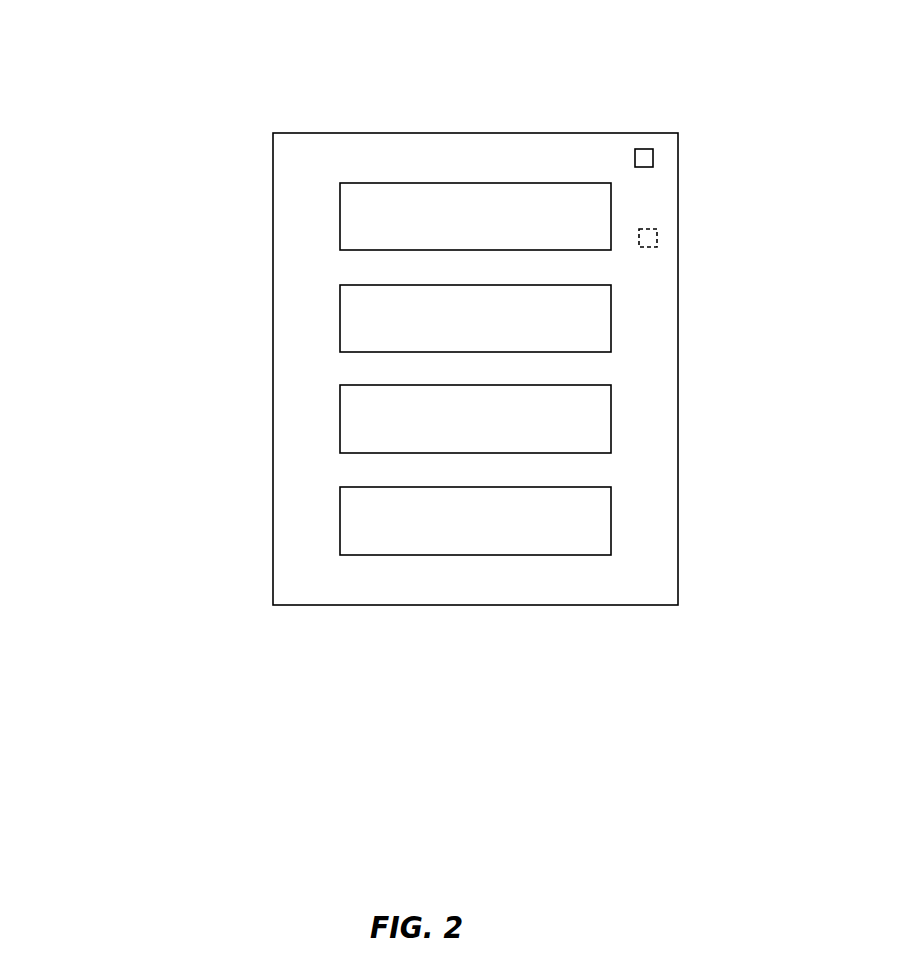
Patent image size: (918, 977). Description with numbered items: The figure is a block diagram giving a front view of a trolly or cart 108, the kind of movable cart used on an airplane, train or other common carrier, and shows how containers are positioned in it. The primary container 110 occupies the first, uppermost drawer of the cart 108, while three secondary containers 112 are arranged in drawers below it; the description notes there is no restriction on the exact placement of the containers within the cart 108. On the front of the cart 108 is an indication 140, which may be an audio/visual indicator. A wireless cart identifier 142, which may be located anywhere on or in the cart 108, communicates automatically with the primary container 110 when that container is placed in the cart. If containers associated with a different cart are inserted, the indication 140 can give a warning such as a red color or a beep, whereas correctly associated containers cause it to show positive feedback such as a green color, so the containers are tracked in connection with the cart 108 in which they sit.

The trolly or cart 108 is at (375, 133).
The primary container 110 is at (543, 183).
The secondary container 112 is at (340, 507).
The indication 140 is at (653, 155).
The wireless cart identifier 142 is at (657, 237).